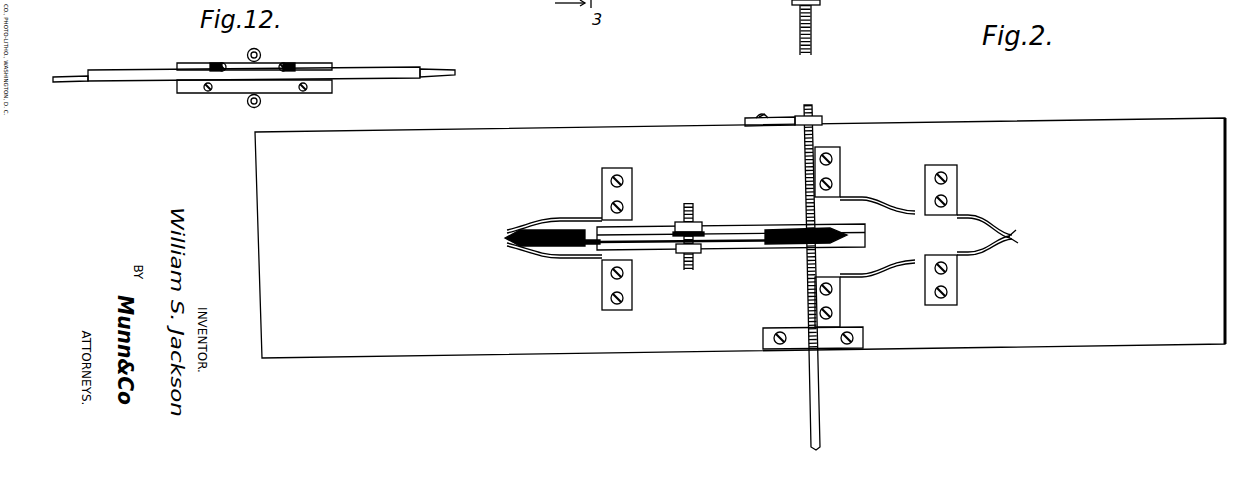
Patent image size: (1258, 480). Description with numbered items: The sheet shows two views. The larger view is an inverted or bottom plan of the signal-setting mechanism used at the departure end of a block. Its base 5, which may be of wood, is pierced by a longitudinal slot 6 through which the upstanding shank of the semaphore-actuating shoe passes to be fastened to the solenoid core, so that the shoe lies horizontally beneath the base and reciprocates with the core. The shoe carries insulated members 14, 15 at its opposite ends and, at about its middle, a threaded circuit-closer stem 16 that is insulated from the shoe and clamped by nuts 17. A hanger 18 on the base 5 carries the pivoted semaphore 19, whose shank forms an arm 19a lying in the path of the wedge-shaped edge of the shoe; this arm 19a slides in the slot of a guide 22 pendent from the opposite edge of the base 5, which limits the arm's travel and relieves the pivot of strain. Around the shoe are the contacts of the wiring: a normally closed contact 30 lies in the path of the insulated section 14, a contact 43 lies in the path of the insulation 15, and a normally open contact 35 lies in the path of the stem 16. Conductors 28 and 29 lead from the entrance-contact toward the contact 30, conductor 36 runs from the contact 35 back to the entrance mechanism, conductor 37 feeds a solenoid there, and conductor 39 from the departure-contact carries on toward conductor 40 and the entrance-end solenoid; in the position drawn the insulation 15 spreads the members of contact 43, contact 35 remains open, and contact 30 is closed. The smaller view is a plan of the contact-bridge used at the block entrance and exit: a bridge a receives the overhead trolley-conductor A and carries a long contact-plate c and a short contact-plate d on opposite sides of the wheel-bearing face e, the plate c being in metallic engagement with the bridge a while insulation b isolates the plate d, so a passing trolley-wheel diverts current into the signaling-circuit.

In FIG. 12, the bridge a is at (330, 64).
In FIG. 12, the insulation b is at (296, 62).
In FIG. 12, the long contact-plate c is at (234, 88).
In FIG. 12, the short contact-plate d is at (267, 62).
In FIG. 12, the wheel-bearing face e is at (175, 82).
In FIG. 12, the overhead trolley-conductor A is at (433, 72).
In FIG. 2, the base 5 is at (1030, 134).
In FIG. 2, the longitudinal slot 6 is at (745, 250).
In FIG. 2, the insulated member 14 is at (800, 247).
In FIG. 2, the insulated member 15 is at (506, 242).
In FIG. 2, the threaded stem 16 is at (705, 280).
In FIG. 2, the nuts 17 is at (680, 252).
In FIG. 2, the hanger 18 is at (803, 346).
In FIG. 2, the semaphore 19 is at (819, 424).
In FIG. 2, the arm 19a is at (813, 112).
In FIG. 2, the guide 22 is at (797, 128).
In FIG. 2, the conductor 28 is at (614, 178).
In FIG. 2, the conductor 29 is at (613, 310).
In FIG. 2, the normally closed contact 30 is at (1012, 242).
In FIG. 2, the normally open contact 35 is at (866, 286).
In FIG. 2, the conductor 36 is at (943, 175).
In FIG. 2, the conductor 37 is at (948, 378).
In FIG. 2, the conductor 39 is at (832, 156).
In FIG. 2, the conductor 40 is at (835, 327).
In FIG. 2, the normally open contact 43 is at (554, 232).